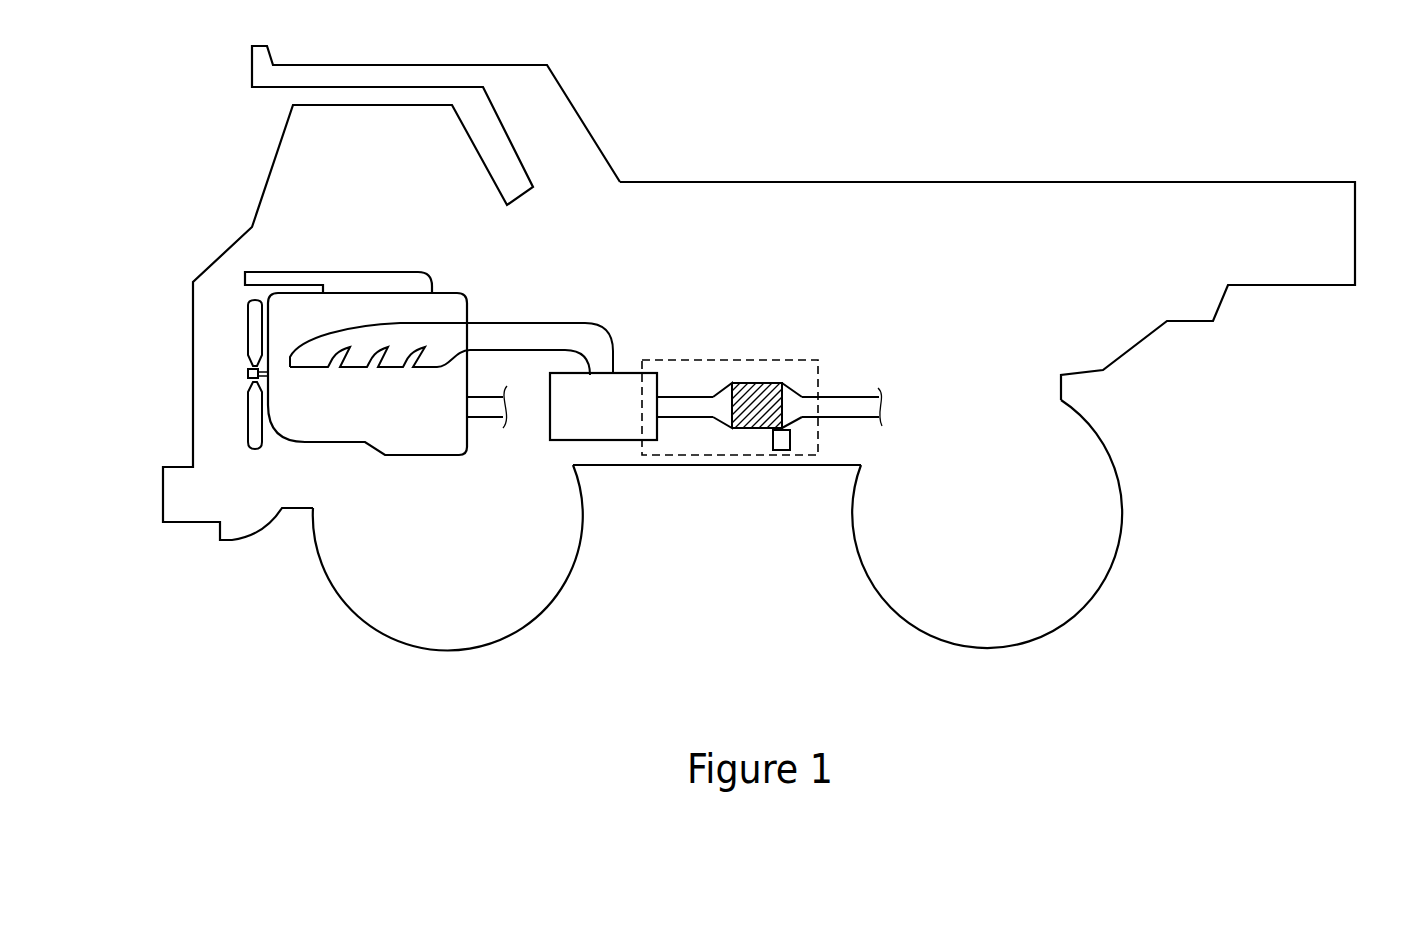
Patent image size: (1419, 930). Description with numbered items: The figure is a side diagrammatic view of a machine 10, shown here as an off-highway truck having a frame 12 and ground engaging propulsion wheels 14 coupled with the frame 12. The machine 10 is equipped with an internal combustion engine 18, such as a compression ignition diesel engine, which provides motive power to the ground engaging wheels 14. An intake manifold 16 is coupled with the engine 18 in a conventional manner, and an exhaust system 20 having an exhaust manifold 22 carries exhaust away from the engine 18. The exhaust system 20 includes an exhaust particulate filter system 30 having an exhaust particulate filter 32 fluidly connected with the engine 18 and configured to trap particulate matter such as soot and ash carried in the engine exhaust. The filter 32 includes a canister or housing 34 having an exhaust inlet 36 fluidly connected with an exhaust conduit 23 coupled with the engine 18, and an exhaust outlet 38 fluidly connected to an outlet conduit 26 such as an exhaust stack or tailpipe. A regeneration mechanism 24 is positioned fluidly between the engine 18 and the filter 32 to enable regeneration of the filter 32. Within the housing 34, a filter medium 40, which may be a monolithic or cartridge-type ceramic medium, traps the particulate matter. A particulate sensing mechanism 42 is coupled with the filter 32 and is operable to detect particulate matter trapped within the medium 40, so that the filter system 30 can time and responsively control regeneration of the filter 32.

The machine 10 is at (965, 146).
The frame 12 is at (1130, 355).
The ground engaging propulsion wheels 14 is at (583, 553).
The intake manifold 16 is at (309, 272).
The internal combustion engine 18 is at (452, 292).
The exhaust system 20 is at (841, 373).
The exhaust manifold 22 is at (324, 369).
The exhaust conduit 23 is at (542, 324).
The regeneration mechanism 24 is at (562, 442).
The outlet conduit 26 is at (855, 419).
The exhaust particulate filter system 30 is at (664, 360).
The exhaust particulate filter 32 is at (757, 430).
The housing 34 is at (732, 431).
The exhaust inlet 36 is at (708, 396).
The exhaust outlet 38 is at (803, 424).
The filter medium 40 is at (757, 386).
The particulate sensing mechanism 42 is at (775, 453).